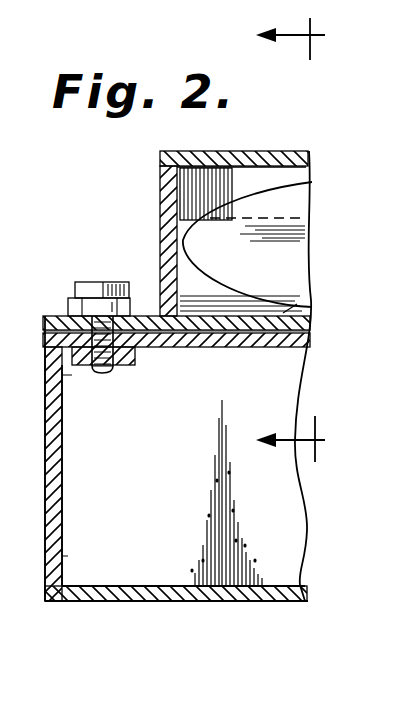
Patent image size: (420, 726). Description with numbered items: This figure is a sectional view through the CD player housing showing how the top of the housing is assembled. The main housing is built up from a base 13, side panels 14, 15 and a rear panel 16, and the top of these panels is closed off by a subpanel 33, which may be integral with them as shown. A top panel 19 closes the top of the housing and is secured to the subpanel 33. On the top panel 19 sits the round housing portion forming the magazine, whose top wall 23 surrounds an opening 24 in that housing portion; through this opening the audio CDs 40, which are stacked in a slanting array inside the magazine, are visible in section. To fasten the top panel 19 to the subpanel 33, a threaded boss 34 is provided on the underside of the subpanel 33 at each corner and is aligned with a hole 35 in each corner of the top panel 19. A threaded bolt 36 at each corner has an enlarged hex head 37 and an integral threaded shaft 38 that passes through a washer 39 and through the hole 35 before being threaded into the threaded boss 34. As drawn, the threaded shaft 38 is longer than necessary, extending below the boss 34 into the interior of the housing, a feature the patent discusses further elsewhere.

The base 13 is at (222, 601).
The side panel 14 is at (314, 257).
The side panel 15 is at (275, 522).
The rear panel 16 is at (60, 557).
The top panel 19 is at (283, 313).
The top wall 23 is at (213, 151).
The opening 24 is at (279, 152).
The subpanel 33 is at (277, 348).
The threaded boss 34 is at (135, 357).
The hole 35 is at (76, 292).
The threaded bolt 36 is at (88, 380).
The hex head 37 is at (86, 283).
The threaded shaft 38 is at (110, 370).
The washer 39 is at (139, 300).
The audio CD 40 is at (293, 203).